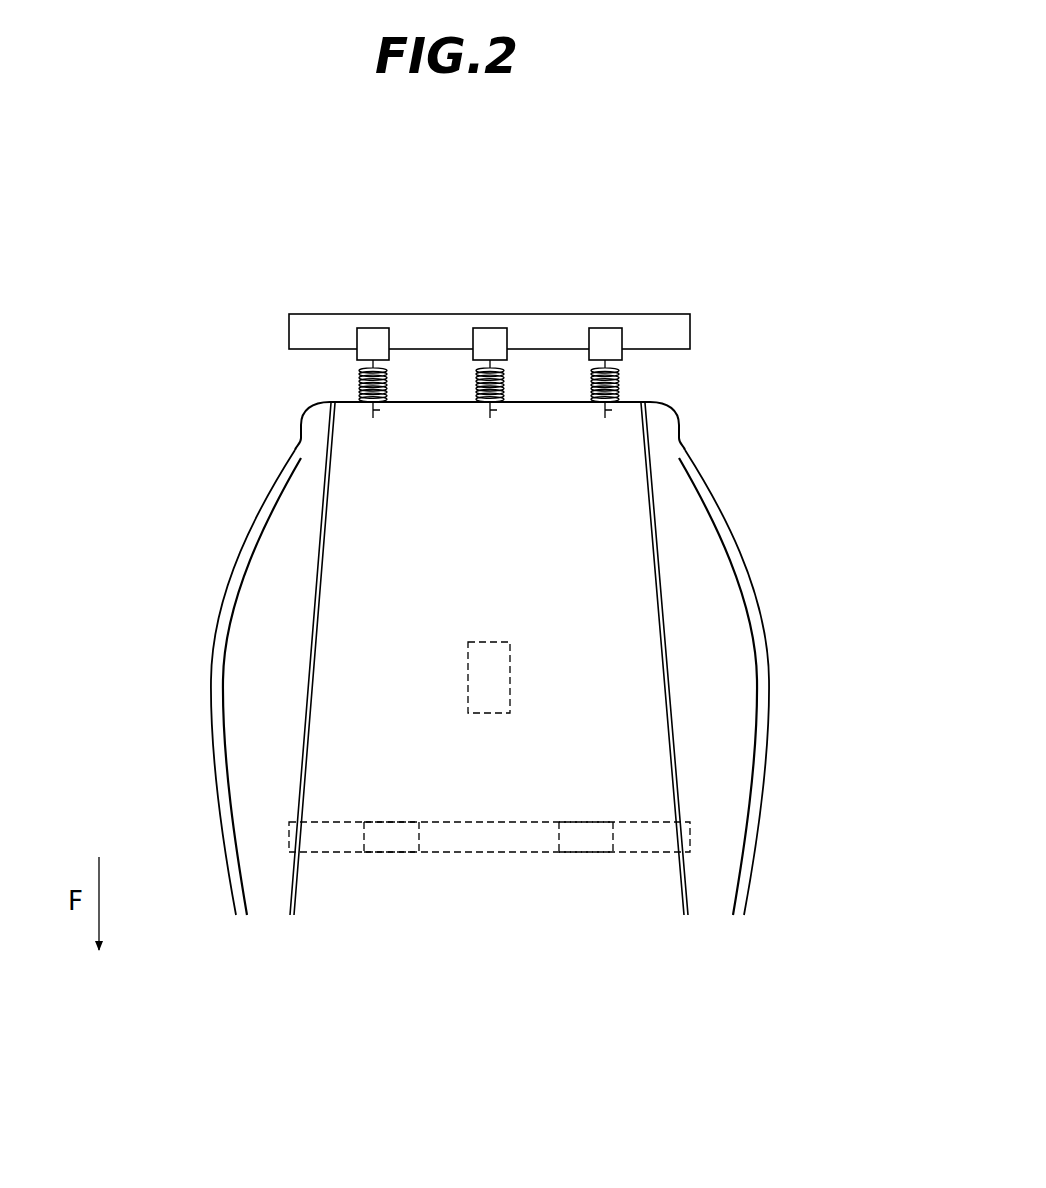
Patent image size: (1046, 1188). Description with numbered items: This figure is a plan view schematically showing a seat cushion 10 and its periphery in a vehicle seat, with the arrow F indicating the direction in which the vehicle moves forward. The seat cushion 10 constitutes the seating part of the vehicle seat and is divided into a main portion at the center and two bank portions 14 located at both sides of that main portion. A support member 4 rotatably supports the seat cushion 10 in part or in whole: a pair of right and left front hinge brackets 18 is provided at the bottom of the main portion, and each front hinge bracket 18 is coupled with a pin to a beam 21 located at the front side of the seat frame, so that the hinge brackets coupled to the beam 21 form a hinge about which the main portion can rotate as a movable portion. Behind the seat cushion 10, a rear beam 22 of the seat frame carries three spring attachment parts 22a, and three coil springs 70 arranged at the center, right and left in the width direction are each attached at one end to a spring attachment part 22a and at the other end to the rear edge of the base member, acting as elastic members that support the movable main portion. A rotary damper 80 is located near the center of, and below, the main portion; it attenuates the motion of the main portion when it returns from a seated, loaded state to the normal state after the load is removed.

The support member 4 is at (533, 903).
The seat cushion 10 is at (182, 468).
The bank portions 14 is at (243, 732).
The front hinge brackets 18 is at (395, 852).
The beam 21 is at (498, 852).
The rear beam 22 is at (668, 330).
The spring attachment part 22a is at (375, 305).
The coil spring 70 is at (372, 405).
The rotary damper 80 is at (497, 642).